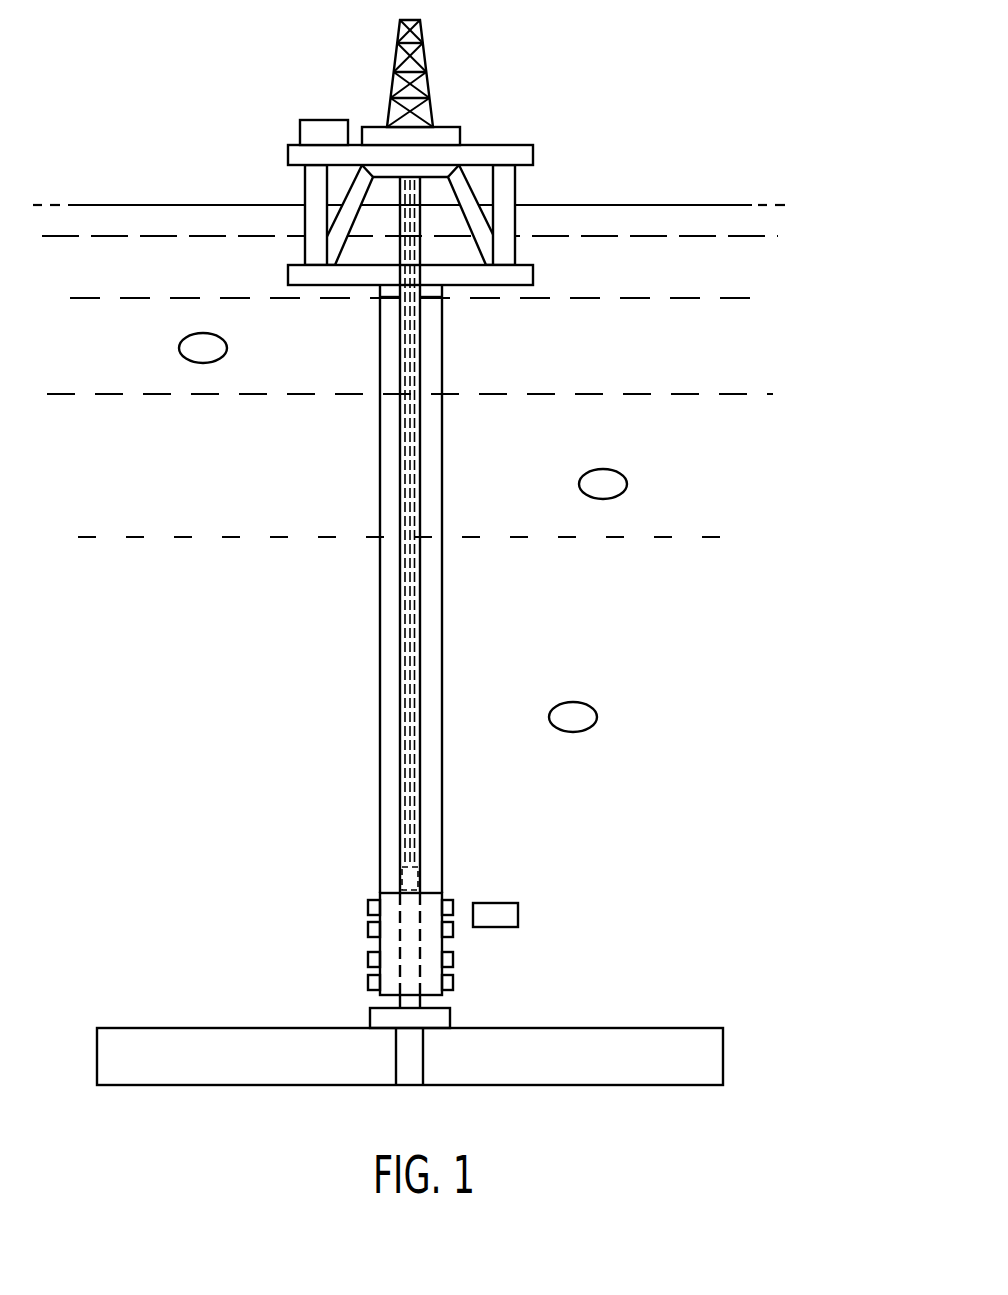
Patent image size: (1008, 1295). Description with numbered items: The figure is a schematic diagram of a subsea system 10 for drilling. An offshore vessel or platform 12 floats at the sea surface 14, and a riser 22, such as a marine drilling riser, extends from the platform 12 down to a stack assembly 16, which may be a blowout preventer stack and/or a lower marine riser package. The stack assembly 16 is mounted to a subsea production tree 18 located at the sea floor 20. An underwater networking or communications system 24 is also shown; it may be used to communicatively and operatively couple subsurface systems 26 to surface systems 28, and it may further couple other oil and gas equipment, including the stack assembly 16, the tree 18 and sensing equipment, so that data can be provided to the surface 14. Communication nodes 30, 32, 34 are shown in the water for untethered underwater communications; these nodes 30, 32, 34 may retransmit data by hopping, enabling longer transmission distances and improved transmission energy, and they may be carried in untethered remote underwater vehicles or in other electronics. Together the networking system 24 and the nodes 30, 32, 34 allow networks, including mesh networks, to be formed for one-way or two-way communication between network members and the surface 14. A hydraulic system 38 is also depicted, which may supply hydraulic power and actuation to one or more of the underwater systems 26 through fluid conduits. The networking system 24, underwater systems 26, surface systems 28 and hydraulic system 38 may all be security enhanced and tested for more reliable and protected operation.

The subsea system 10 is at (634, 50).
The offshore vessel or platform 12 is at (443, 127).
The sea surface 14 is at (654, 198).
The stack assembly 16 is at (348, 946).
The subsea production tree 18 is at (450, 1017).
The sea floor 20 is at (633, 1028).
The riser 22 is at (422, 480).
The underwater networking system 24 is at (378, 692).
The subsurface systems 26 is at (497, 903).
The surface systems 28 is at (323, 120).
The communication node 30 is at (577, 702).
The communication node 32 is at (602, 470).
The communication node 34 is at (218, 335).
The hydraulic system 38 is at (443, 692).